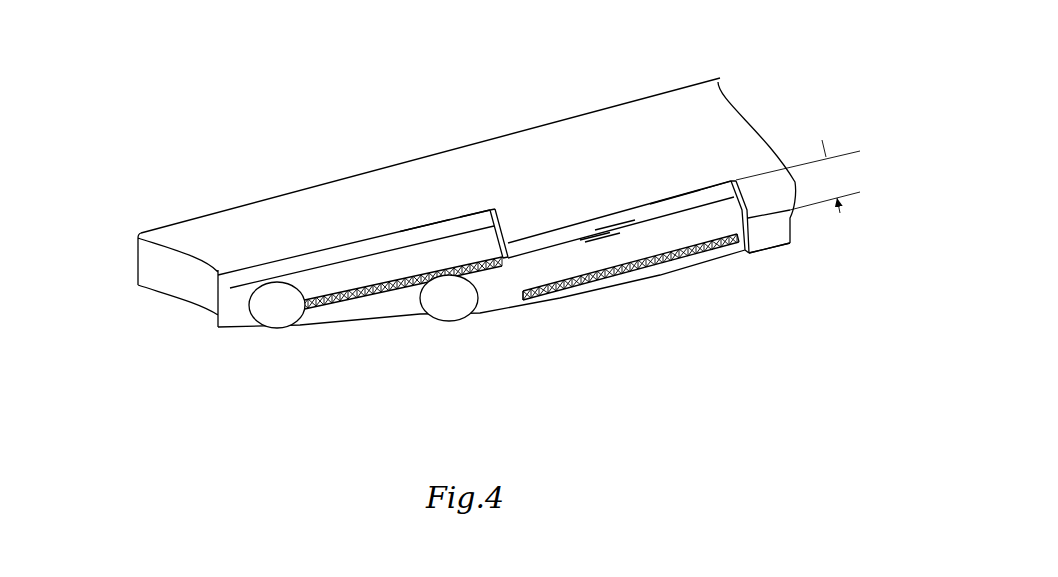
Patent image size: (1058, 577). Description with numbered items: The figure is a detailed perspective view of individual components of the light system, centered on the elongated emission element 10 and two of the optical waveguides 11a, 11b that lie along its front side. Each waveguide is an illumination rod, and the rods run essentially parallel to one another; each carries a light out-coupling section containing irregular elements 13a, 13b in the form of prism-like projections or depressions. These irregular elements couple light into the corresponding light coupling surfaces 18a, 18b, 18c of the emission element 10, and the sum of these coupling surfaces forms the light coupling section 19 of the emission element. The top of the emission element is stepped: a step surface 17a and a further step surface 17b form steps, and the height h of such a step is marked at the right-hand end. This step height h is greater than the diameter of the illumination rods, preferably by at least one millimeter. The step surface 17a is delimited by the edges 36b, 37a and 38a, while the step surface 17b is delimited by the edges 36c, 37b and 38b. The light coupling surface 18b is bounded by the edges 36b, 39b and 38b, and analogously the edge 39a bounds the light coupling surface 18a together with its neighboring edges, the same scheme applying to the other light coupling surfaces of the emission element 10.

The emission element 10 is at (572, 157).
The optical waveguide 11a is at (322, 323).
The optical waveguide 11b is at (495, 323).
The irregular elements 13a is at (373, 296).
The irregular elements 13b is at (602, 288).
The step surface 17a is at (488, 230).
The step surface 17b is at (732, 202).
The light coupling surface 18a is at (317, 260).
The light coupling surface 18b is at (608, 227).
The light coupling surface 18c is at (783, 220).
The light coupling section 19 is at (597, 232).
The edge 36b is at (593, 239).
The edge 36c is at (749, 237).
The edge 37a is at (507, 223).
The edge 37b is at (746, 194).
The edge 38a is at (480, 217).
The edge 38b is at (722, 190).
The edge 39a is at (425, 220).
The edge 39b is at (672, 196).
The height of the step h is at (798, 176).